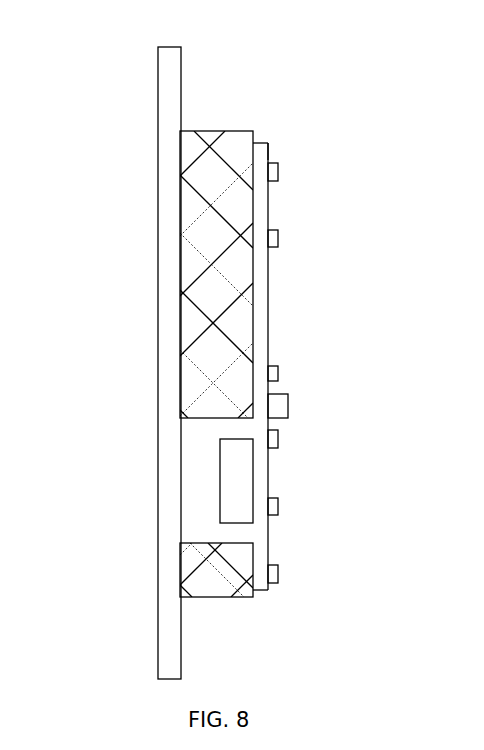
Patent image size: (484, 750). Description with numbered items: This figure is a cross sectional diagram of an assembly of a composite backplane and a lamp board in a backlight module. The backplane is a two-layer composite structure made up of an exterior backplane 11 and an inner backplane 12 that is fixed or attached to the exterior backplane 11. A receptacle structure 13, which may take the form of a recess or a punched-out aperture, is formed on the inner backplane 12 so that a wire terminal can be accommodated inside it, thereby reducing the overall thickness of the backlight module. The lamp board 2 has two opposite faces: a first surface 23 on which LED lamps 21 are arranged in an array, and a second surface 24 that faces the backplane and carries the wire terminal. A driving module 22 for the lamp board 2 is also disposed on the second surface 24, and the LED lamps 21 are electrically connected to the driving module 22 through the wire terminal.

The exterior backplane 11 is at (168, 105).
The inner backplane 12 is at (222, 140).
The receptacle structure 13 is at (199, 419).
The lamp board 2 is at (269, 212).
The LED lamps 21 is at (281, 241).
The driving module 22 is at (243, 477).
The first surface 23 is at (273, 147).
The second surface 24 is at (250, 300).